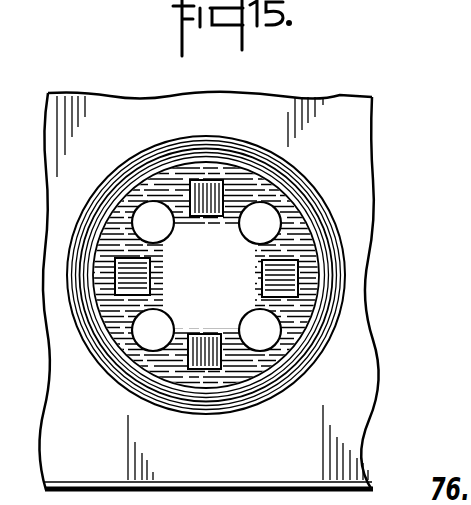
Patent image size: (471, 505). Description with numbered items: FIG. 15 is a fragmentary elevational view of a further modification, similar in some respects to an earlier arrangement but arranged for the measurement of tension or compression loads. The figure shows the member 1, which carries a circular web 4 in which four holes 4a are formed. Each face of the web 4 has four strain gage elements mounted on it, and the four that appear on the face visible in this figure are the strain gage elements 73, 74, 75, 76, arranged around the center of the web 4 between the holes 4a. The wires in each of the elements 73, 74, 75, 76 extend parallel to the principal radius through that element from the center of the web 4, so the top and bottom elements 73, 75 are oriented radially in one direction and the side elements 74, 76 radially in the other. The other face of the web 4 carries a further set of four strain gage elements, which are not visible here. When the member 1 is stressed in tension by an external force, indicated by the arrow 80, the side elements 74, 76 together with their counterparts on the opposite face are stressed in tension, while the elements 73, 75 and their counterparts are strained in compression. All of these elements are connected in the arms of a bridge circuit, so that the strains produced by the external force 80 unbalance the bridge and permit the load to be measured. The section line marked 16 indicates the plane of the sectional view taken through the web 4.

The member 1 is at (357, 400).
The web 4 is at (302, 317).
The holes 4a is at (164, 234).
The strain gage element 73 is at (200, 216).
The strain gage element 74 is at (262, 280).
The strain gage element 75 is at (203, 334).
The strain gage element 76 is at (150, 279).
The arrow 80 is at (55, 278).
The section line 16 is at (250, 113).